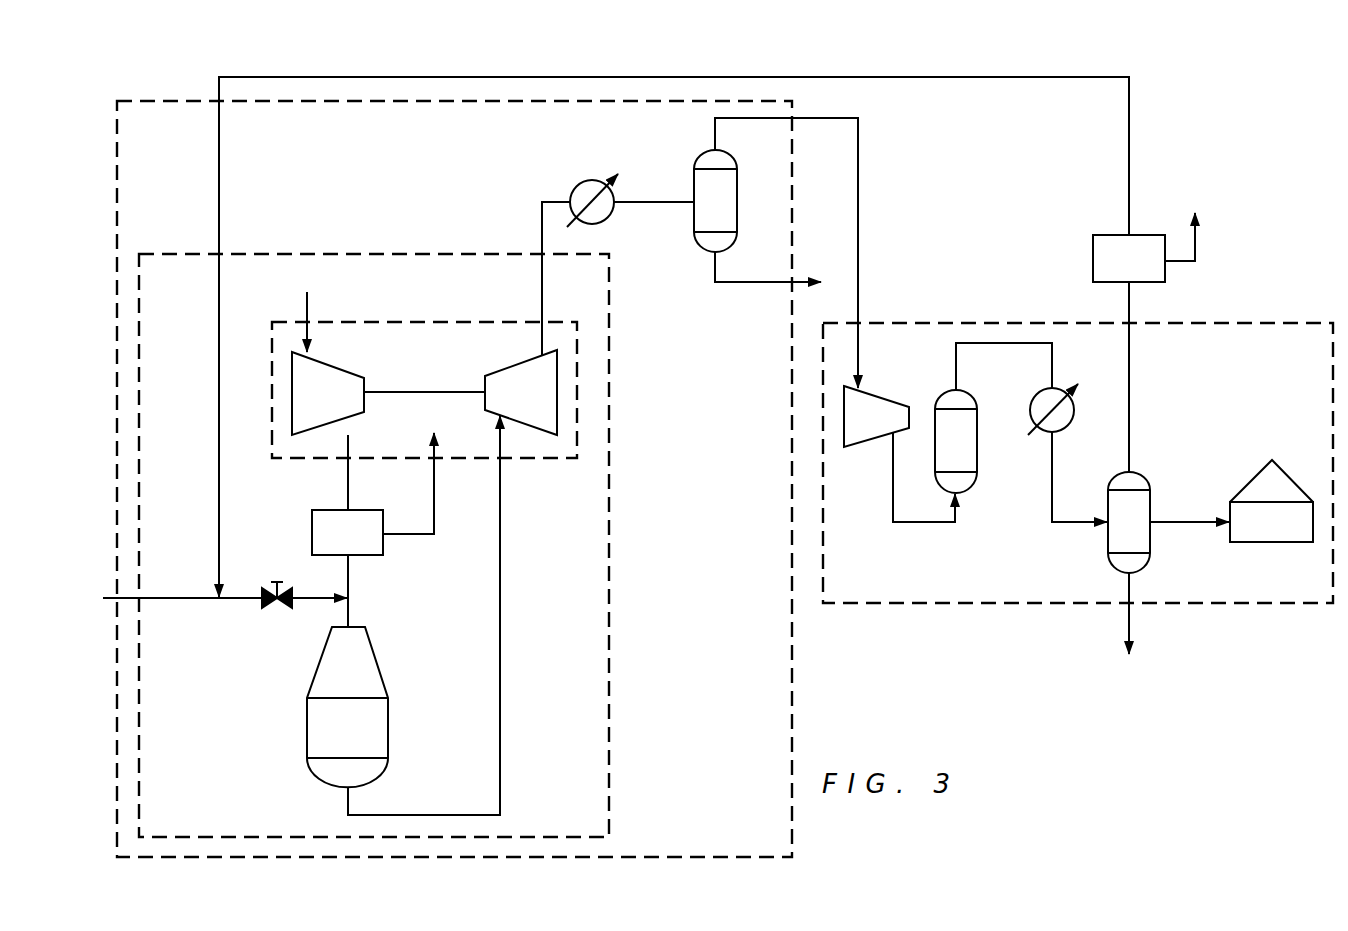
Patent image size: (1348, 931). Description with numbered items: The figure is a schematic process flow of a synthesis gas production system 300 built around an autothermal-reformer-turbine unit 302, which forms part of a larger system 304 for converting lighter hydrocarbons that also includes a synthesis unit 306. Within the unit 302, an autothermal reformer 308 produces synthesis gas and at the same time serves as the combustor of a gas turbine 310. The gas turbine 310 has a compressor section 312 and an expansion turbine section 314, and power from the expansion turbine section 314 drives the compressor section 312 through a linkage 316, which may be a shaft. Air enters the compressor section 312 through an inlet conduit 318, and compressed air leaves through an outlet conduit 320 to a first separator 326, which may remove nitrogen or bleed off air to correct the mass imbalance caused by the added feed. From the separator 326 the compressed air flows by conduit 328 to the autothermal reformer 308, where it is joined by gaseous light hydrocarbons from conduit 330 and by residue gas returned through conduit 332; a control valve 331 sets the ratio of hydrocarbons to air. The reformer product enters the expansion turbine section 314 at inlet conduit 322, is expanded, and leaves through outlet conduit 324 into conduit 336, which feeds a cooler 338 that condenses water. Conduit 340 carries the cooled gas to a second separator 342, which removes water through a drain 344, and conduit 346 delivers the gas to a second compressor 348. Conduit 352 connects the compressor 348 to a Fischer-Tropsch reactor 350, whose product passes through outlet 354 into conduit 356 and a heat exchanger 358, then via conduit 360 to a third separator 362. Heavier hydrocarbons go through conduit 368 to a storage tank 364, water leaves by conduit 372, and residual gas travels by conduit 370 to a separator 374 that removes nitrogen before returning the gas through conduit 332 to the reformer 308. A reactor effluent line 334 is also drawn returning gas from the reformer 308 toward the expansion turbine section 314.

The synthesis gas production system 300 is at (794, 676).
The autothermal-reformer-turbine unit 302 is at (372, 251).
The system for converting lighter hydrocarbons 304 is at (833, 70).
The synthesis unit 306 is at (1230, 605).
The autothermal reformer 308 is at (306, 730).
The gas turbine 310 is at (428, 320).
The compressor section 312 is at (306, 405).
The expansion turbine section 314 is at (509, 405).
The linkage 316 is at (435, 391).
The inlet conduit 318 is at (306, 310).
The outlet conduit 320 is at (350, 492).
The inlet conduit 322 is at (503, 448).
The outlet conduit 324 is at (540, 358).
The first separator 326 is at (385, 546).
The conduit 328 is at (350, 585).
The conduit 330 is at (190, 597).
The control valve 331 is at (273, 585).
The conduit 332 is at (218, 440).
The reactor effluent line 334 is at (502, 706).
The conduit 336 is at (541, 228).
The cooler 338 is at (592, 180).
The conduit 340 is at (668, 198).
The second separator 342 is at (692, 222).
The drain 344 is at (748, 283).
The conduit 346 is at (862, 222).
The second compressor 348 is at (890, 388).
The Fischer-Tropsch reactor 350 is at (978, 474).
The conduit 352 is at (925, 524).
The outlet 354 is at (962, 390).
The conduit 356 is at (1055, 358).
The heat exchanger 358 is at (1040, 430).
The conduit 360 is at (1072, 520).
The third separator 362 is at (1106, 544).
The storage tank 364 is at (1272, 544).
The conduit 368 is at (1180, 520).
The conduit 370 is at (1131, 392).
The conduit 372 is at (1127, 624).
The separator 374 is at (1092, 260).